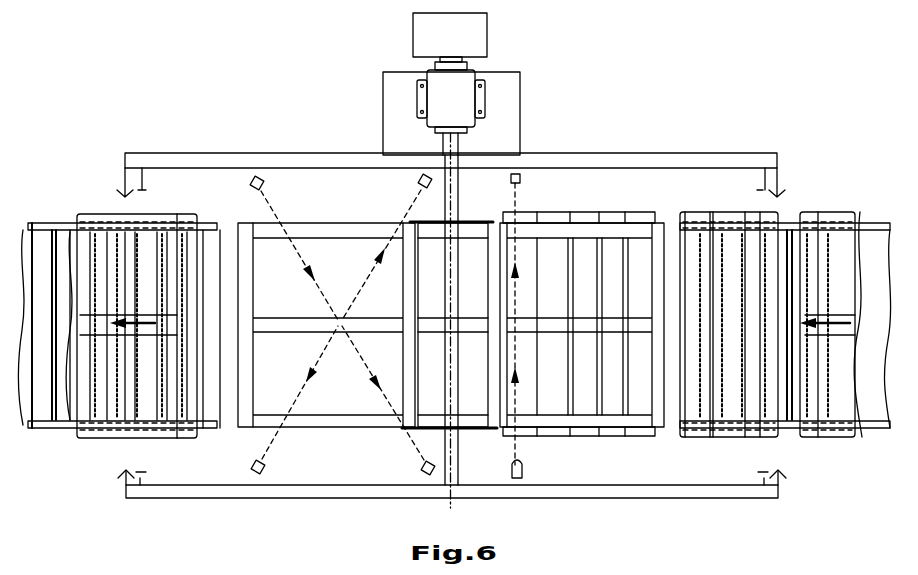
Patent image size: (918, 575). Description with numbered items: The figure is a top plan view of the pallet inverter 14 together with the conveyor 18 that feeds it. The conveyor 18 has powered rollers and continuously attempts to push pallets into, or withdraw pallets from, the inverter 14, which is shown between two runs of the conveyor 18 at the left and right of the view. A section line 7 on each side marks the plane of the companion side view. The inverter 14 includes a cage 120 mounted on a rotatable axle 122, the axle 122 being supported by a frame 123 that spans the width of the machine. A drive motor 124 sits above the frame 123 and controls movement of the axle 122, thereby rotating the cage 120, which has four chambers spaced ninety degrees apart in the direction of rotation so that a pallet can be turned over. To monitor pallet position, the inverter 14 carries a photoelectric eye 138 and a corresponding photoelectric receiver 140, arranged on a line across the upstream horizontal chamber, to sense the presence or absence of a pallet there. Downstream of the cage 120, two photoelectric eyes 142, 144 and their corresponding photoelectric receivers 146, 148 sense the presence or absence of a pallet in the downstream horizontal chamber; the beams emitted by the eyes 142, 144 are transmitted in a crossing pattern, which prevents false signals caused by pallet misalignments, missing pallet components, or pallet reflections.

The section line 7- 7 is at (50, 467).
The inverter 14 is at (82, 507).
The conveyor 18 is at (866, 240).
The cage 120 is at (237, 206).
The axle 122 is at (455, 462).
The frame 123 is at (657, 163).
The drive motor 124 is at (468, 93).
The photoelectric eye 138 is at (524, 472).
The photoelectric receiver 140 is at (522, 180).
The photoelectric eye 142 is at (424, 478).
The photoelectric eye 144 is at (420, 180).
The photoelectric receiver 146 is at (258, 176).
The photoelectric receiver 148 is at (250, 472).